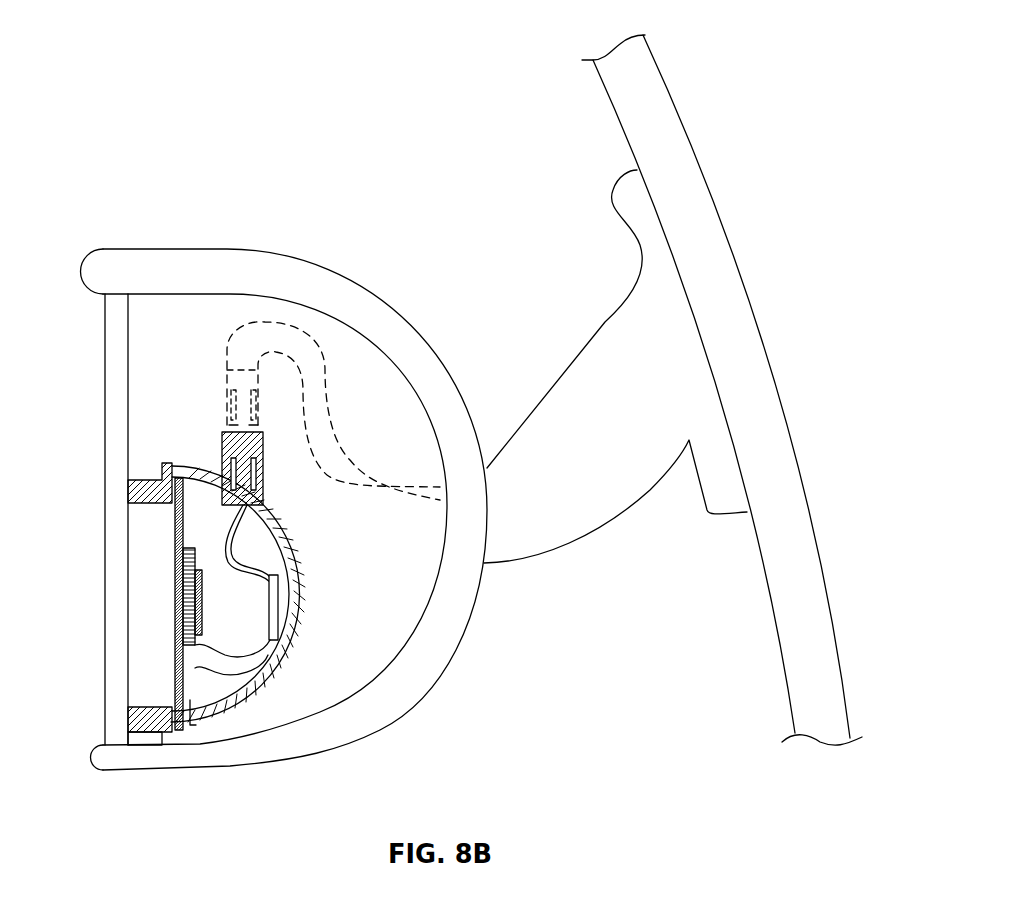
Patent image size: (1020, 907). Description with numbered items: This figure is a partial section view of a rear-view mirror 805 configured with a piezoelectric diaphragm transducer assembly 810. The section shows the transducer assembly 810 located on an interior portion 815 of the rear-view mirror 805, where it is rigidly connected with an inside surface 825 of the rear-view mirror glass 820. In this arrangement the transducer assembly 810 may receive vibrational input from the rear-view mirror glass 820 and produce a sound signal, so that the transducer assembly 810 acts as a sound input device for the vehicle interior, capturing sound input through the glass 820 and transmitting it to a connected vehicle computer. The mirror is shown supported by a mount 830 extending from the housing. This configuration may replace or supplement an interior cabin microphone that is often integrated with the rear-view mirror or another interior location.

The rear-view mirror 805 is at (388, 254).
The transducer assembly 810 is at (176, 700).
The interior portion 815 is at (165, 305).
The rear-view mirror glass 820 is at (105, 588).
The inside surface 825 is at (131, 345).
The headband frame 830 is at (843, 672).